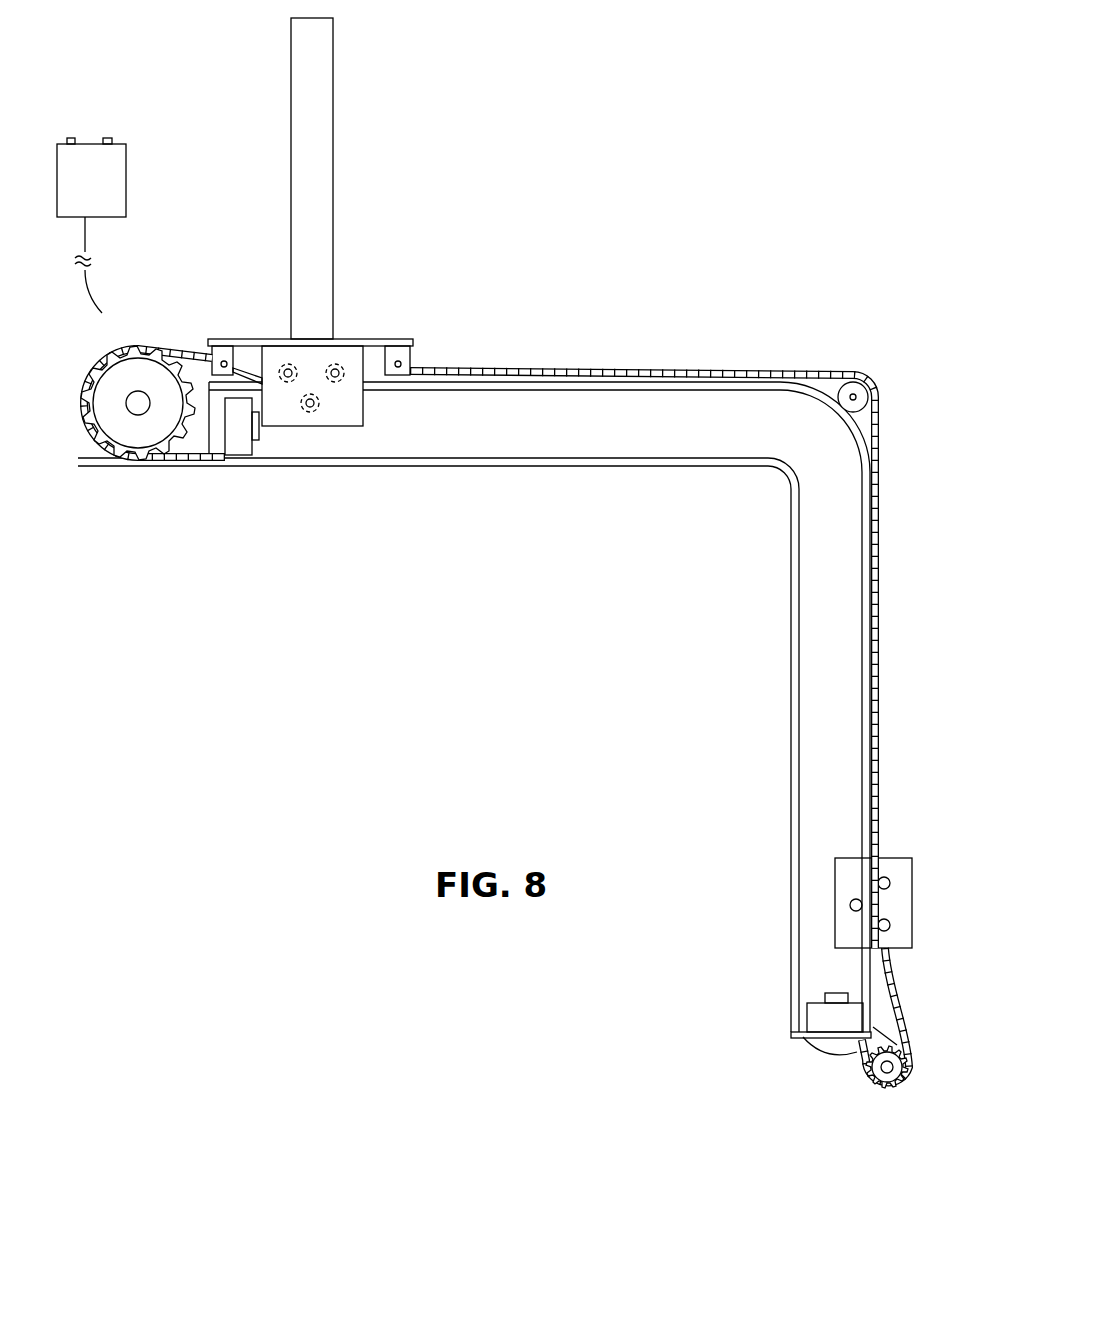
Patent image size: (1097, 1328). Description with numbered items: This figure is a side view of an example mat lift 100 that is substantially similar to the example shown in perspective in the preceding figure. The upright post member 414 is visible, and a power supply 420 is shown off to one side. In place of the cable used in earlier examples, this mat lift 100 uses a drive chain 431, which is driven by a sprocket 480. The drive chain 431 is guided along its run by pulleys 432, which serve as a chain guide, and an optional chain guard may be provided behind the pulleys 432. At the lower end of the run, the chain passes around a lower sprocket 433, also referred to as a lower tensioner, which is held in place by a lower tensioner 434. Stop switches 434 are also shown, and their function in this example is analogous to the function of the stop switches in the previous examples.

The mat lift 100 is at (700, 135).
The post member 414 is at (330, 90).
The power supply 420 is at (87, 138).
The drive chain 431 is at (560, 353).
The pulleys 432 is at (868, 388).
The lower sprocket 433 is at (828, 1050).
The stop switches 434 is at (235, 458).
The sprocket 480 is at (120, 390).